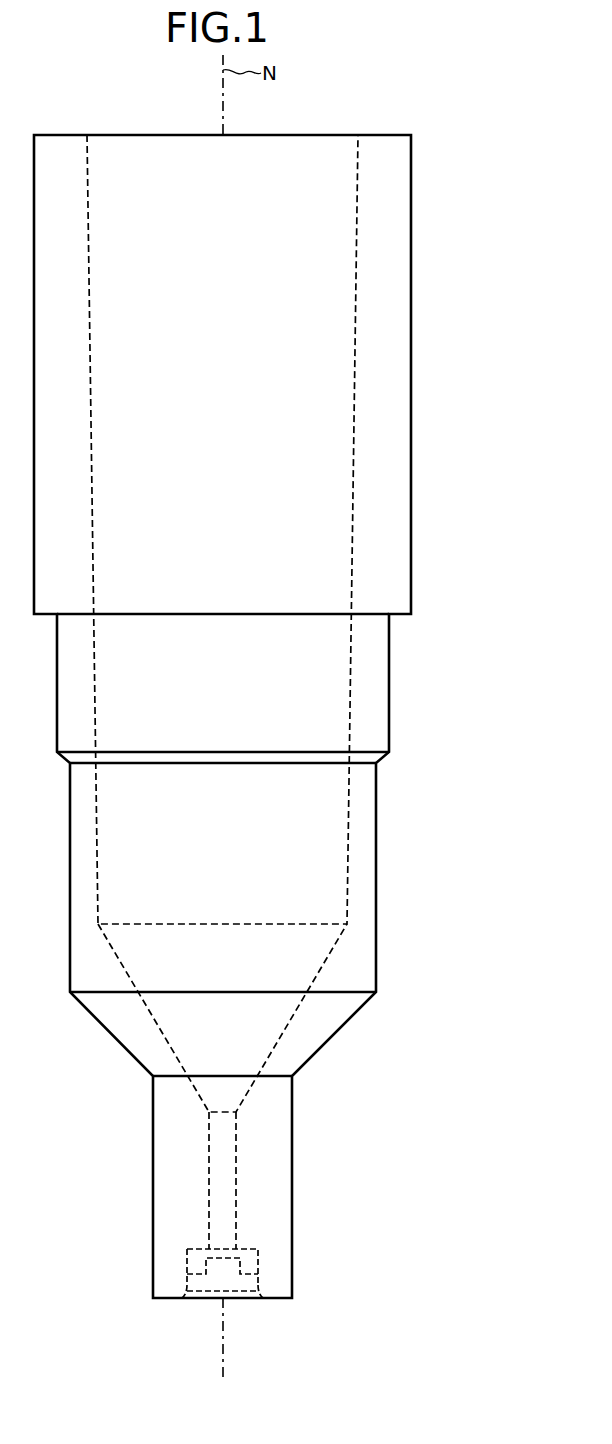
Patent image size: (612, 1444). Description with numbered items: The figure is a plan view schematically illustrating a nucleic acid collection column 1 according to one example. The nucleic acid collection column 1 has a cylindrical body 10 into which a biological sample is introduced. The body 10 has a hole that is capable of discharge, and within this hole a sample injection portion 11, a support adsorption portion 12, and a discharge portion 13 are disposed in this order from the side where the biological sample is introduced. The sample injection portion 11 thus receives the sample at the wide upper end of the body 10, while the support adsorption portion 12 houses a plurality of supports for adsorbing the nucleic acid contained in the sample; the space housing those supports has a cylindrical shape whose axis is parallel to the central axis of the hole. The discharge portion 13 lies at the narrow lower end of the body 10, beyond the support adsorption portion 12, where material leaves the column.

The nucleic acid collection column 1 is at (396, 94).
The body 10 is at (411, 372).
The sample injection portion 11 is at (370, 458).
The support adsorption portion 12 is at (252, 1157).
The discharge portion 13 is at (274, 1272).